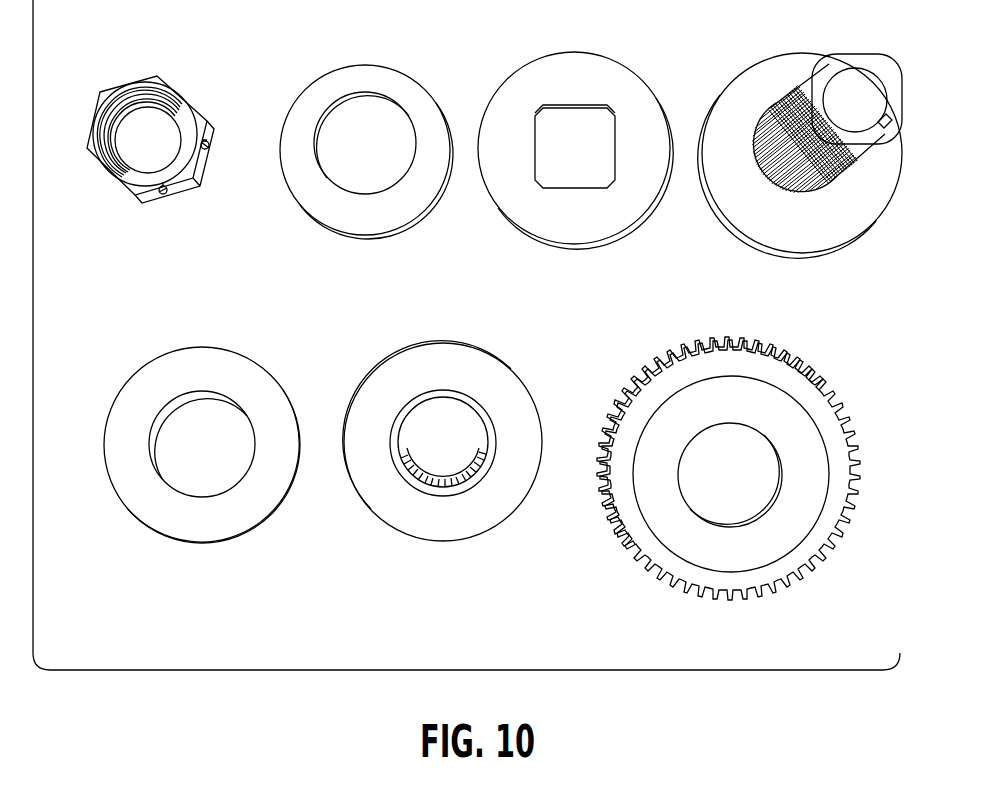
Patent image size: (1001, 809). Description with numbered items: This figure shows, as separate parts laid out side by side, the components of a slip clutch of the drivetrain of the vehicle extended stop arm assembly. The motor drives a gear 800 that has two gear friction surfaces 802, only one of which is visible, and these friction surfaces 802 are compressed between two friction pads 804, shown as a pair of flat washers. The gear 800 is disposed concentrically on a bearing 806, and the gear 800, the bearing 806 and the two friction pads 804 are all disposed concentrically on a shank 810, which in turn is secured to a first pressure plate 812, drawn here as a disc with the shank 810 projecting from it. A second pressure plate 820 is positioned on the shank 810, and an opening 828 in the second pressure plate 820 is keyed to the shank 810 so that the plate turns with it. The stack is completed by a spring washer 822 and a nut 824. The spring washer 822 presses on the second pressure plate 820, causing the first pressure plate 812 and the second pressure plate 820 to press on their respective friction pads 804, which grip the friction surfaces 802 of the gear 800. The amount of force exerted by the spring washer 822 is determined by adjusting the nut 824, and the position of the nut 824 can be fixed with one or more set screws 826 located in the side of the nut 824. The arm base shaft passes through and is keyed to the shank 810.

The gear 800 is at (718, 350).
The gear friction surface 802 is at (660, 487).
The friction pad 804 is at (202, 362).
The bearing 806 is at (438, 475).
The shank 810 is at (860, 62).
The first pressure plate 812 is at (795, 133).
The second pressure plate 820 is at (575, 133).
The spring washer 822 is at (358, 78).
The nut 824 is at (138, 200).
The set screw 826 is at (212, 146).
The opening 828 is at (592, 164).